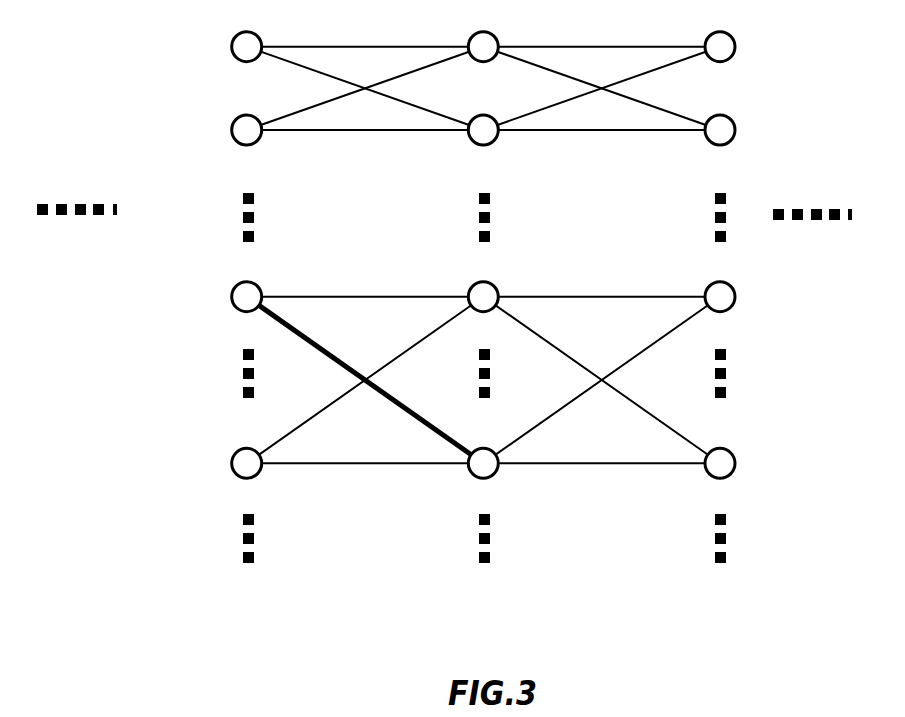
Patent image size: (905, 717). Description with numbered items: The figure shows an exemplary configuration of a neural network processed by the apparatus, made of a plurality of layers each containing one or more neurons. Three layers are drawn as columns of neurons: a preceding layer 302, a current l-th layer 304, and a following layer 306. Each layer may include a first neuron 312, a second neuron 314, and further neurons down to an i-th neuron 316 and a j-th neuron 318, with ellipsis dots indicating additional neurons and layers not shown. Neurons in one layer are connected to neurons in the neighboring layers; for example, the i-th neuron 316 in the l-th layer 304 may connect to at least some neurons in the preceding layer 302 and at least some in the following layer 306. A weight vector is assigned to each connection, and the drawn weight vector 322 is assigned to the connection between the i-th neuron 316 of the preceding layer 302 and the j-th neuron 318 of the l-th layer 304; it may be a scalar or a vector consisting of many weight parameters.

The (l−1)-th layer 302 is at (202, 333).
The l-th layer 304 is at (492, 335).
The (l+1)-th layer 306 is at (714, 335).
The 1st neuron 312 is at (197, 48).
The 2nd neuron 314 is at (197, 131).
The i-th neuron 316 is at (196, 299).
The j-th neuron 318 is at (196, 465).
The weight vector 322 is at (427, 424).